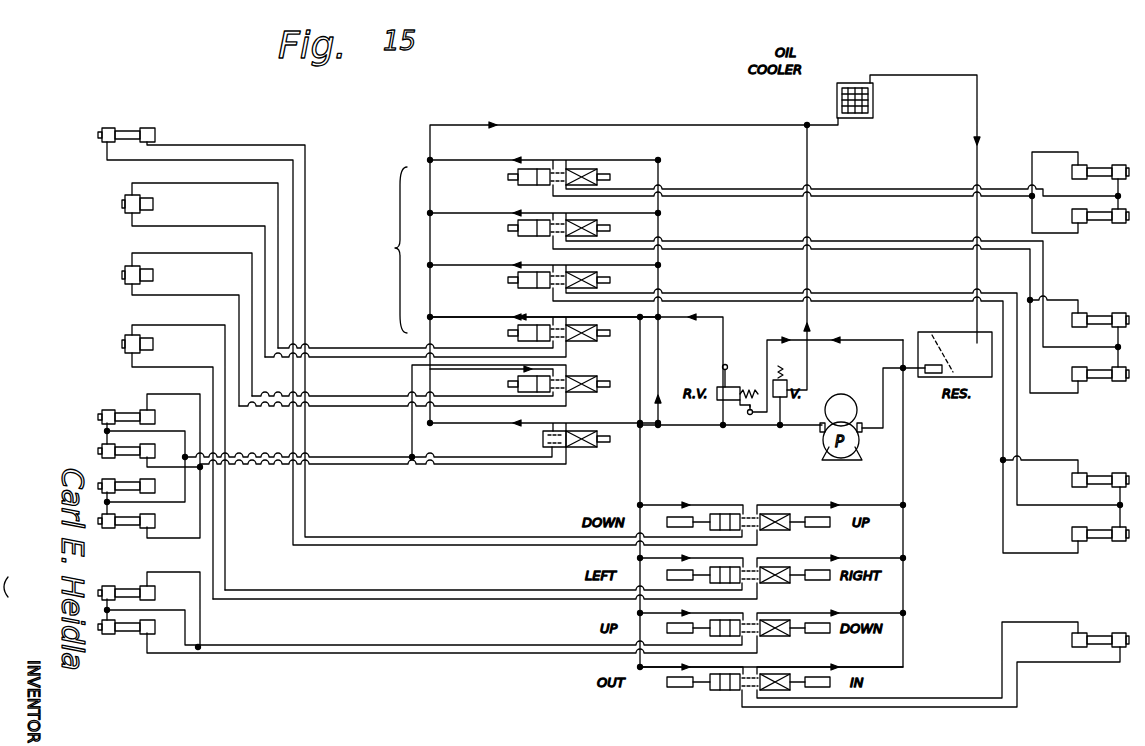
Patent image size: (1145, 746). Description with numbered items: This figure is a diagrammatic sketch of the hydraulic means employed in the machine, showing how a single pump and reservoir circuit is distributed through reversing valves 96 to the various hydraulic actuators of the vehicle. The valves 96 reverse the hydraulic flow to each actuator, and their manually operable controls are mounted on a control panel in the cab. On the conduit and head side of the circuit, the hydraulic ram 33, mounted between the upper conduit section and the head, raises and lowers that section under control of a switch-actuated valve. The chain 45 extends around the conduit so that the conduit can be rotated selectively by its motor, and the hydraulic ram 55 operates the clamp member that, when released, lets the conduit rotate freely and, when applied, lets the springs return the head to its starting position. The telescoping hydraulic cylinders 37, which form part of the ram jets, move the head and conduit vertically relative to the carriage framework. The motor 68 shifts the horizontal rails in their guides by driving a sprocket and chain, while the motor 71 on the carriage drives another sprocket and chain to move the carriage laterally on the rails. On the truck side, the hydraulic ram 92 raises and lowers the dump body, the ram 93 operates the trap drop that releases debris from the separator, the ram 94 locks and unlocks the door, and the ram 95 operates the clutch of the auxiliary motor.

The hydraulic ram 33 is at (125, 127).
The motor 68 is at (122, 199).
The chain 45 is at (122, 270).
The motor 71 is at (122, 340).
The hydraulic ram 55 is at (100, 446).
The telescoping hydraulic cylinders 37 is at (136, 628).
The valves 96 is at (400, 250).
The ram 93 is at (1104, 179).
The hydraulic ram 92 is at (1101, 329).
The ram 94 is at (1101, 489).
The ram 95 is at (1101, 648).